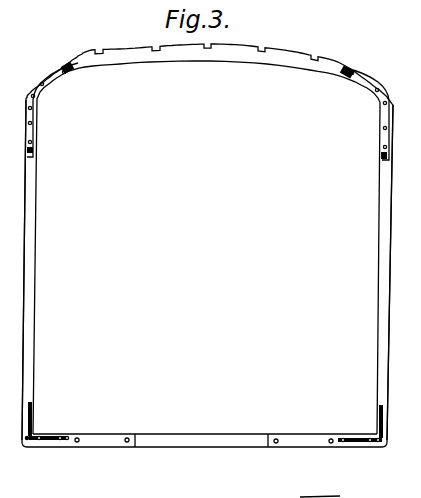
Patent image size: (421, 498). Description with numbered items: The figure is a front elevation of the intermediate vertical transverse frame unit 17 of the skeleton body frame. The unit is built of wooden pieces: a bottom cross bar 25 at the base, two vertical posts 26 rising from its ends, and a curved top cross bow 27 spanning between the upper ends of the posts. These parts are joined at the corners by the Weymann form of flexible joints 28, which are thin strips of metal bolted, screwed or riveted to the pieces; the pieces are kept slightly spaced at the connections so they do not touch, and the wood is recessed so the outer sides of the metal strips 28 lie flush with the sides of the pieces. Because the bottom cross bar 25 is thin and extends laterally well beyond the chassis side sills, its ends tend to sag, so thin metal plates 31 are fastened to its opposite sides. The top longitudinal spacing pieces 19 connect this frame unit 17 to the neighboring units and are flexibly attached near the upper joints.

The intermediate vertical transverse frame unit 17 is at (87, 55).
The top cross bow 27 is at (289, 58).
The vertical posts 26 is at (33, 283).
The bottom cross bar 25 is at (176, 436).
The flexible joints 28 is at (62, 427).
The thin metal plates 31 is at (105, 443).
The top longitudinal spacing pieces 19 is at (320, 497).